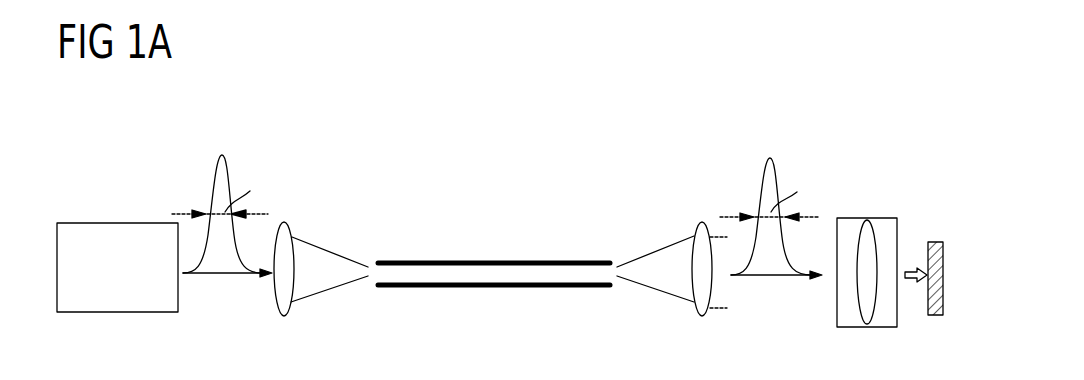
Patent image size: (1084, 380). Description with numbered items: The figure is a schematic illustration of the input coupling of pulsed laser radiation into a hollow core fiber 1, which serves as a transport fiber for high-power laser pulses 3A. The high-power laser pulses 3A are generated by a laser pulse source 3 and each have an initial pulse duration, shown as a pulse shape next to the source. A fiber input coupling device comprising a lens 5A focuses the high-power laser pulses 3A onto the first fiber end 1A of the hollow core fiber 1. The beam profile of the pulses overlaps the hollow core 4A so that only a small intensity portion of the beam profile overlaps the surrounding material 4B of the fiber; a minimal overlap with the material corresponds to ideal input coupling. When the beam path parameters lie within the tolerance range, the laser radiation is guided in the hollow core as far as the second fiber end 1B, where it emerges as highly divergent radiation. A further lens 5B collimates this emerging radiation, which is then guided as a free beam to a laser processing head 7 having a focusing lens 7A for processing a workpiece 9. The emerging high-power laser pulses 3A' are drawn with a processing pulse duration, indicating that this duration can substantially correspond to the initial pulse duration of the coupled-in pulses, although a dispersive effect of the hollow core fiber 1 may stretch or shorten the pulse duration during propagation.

The hollow core fiber 1 is at (494, 266).
The first fiber end 1A is at (355, 236).
The second fiber end 1B is at (624, 240).
The laser pulse source 3 is at (111, 223).
The high-power laser pulses 3A is at (210, 187).
The emerging high-power laser pulses 3A' is at (759, 185).
The hollow core 4A is at (405, 266).
The material of the hollow core fiber 4B is at (421, 289).
The lens 5A is at (292, 313).
The further lens 5B is at (697, 314).
The laser processing head 7 is at (842, 239).
The focusing lens 7A is at (858, 300).
The workpiece 9 is at (936, 242).